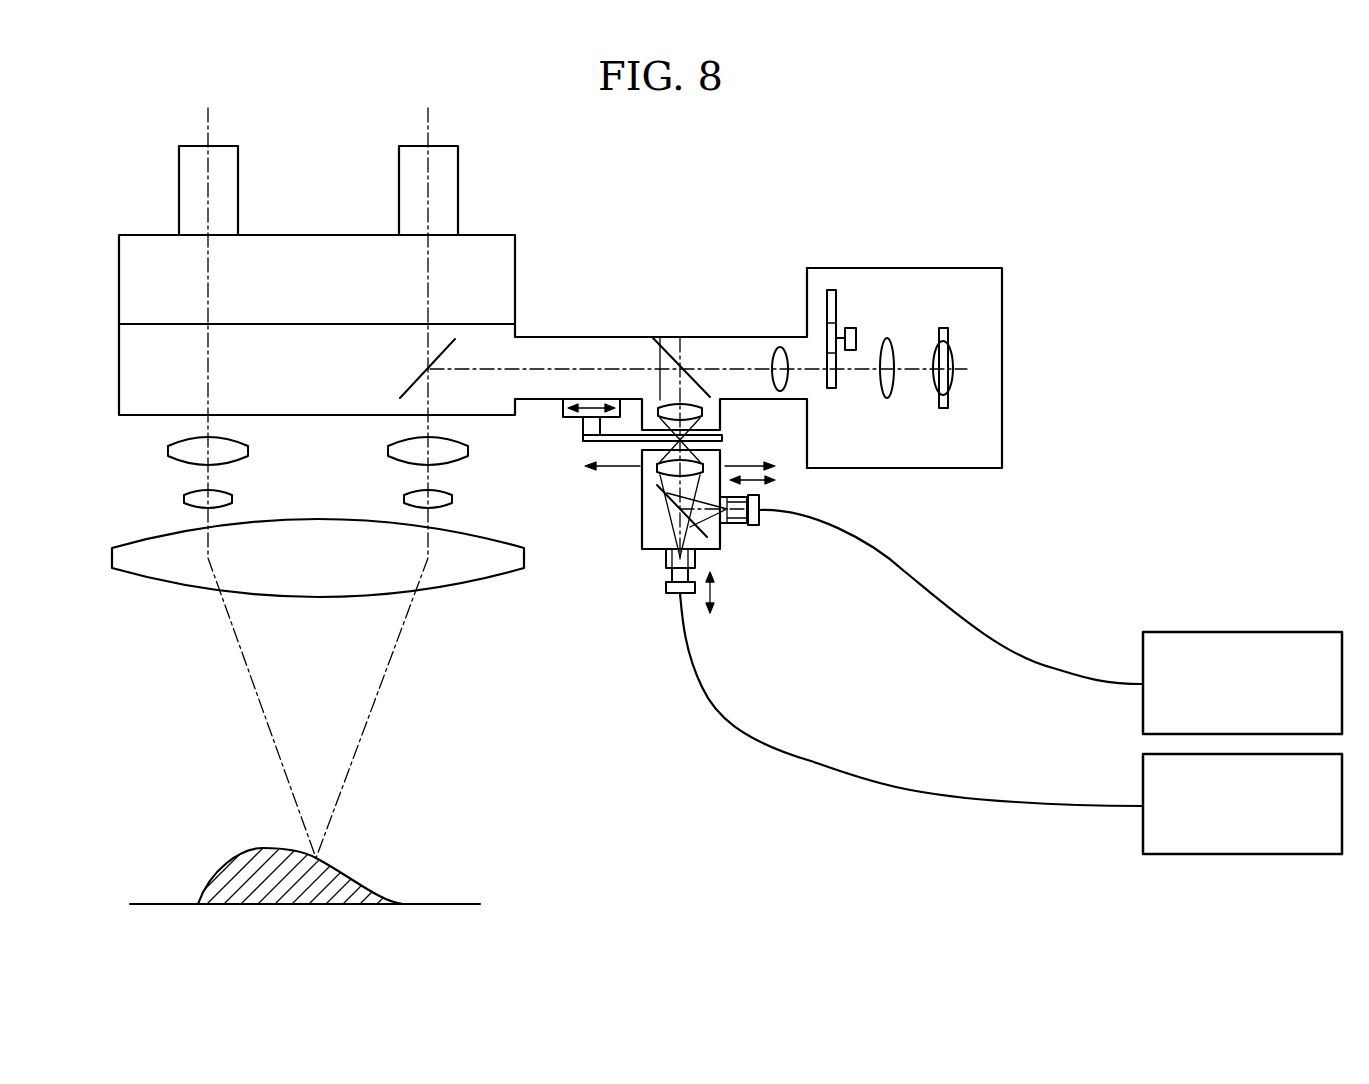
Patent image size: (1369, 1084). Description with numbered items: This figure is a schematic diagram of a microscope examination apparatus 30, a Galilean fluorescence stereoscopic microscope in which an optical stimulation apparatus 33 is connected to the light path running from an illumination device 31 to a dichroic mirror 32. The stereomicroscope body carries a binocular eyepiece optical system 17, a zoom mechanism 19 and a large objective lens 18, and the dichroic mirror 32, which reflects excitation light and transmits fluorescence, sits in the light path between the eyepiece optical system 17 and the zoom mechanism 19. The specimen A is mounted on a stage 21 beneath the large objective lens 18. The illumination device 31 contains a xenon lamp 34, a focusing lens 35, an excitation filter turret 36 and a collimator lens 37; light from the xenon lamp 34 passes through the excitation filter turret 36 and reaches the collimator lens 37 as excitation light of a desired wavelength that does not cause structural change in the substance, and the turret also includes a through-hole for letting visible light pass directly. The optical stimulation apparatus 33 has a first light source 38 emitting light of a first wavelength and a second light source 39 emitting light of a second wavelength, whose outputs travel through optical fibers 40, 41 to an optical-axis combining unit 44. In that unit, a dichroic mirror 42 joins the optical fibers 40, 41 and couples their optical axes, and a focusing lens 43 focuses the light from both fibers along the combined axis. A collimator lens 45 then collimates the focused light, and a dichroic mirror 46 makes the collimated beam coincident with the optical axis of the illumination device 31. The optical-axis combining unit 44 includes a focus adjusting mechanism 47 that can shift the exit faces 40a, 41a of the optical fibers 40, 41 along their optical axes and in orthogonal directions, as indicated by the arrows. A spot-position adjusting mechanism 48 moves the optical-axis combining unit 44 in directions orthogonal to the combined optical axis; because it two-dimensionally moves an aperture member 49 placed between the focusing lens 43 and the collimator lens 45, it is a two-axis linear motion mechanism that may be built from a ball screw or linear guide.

The binocular eyepiece optical system 17 is at (179, 178).
The large objective lens 18 is at (465, 583).
The zoom mechanism 19 is at (158, 475).
The stage 21 is at (433, 904).
The specimen A is at (264, 848).
The microscope examination apparatus 30 is at (968, 183).
The illumination device 31 is at (1002, 291).
The dichroic mirror 32 is at (410, 387).
The optical stimulation apparatus 33 is at (780, 818).
The xenon lamp 34 is at (950, 333).
The focusing lens 35 is at (890, 338).
The excitation filter turret 36 is at (830, 290).
The collimator lens 37 is at (773, 345).
The first light source 38 is at (1232, 632).
The second light source 39 is at (1143, 830).
The optical fiber 40 is at (990, 630).
The exit face 40a is at (722, 524).
The optical fiber 41 is at (920, 795).
The exit face 41a is at (668, 557).
The dichroic mirror 42 is at (657, 487).
The focusing lens 43 is at (658, 468).
The optical-axis combining unit 44 is at (645, 549).
The collimator lens 45 is at (703, 412).
The dichroic mirror 46 is at (683, 368).
The focus adjusting mechanism 47 is at (756, 520).
The spot-position adjusting mechanism 48 is at (543, 430).
The aperture member 49 is at (610, 443).